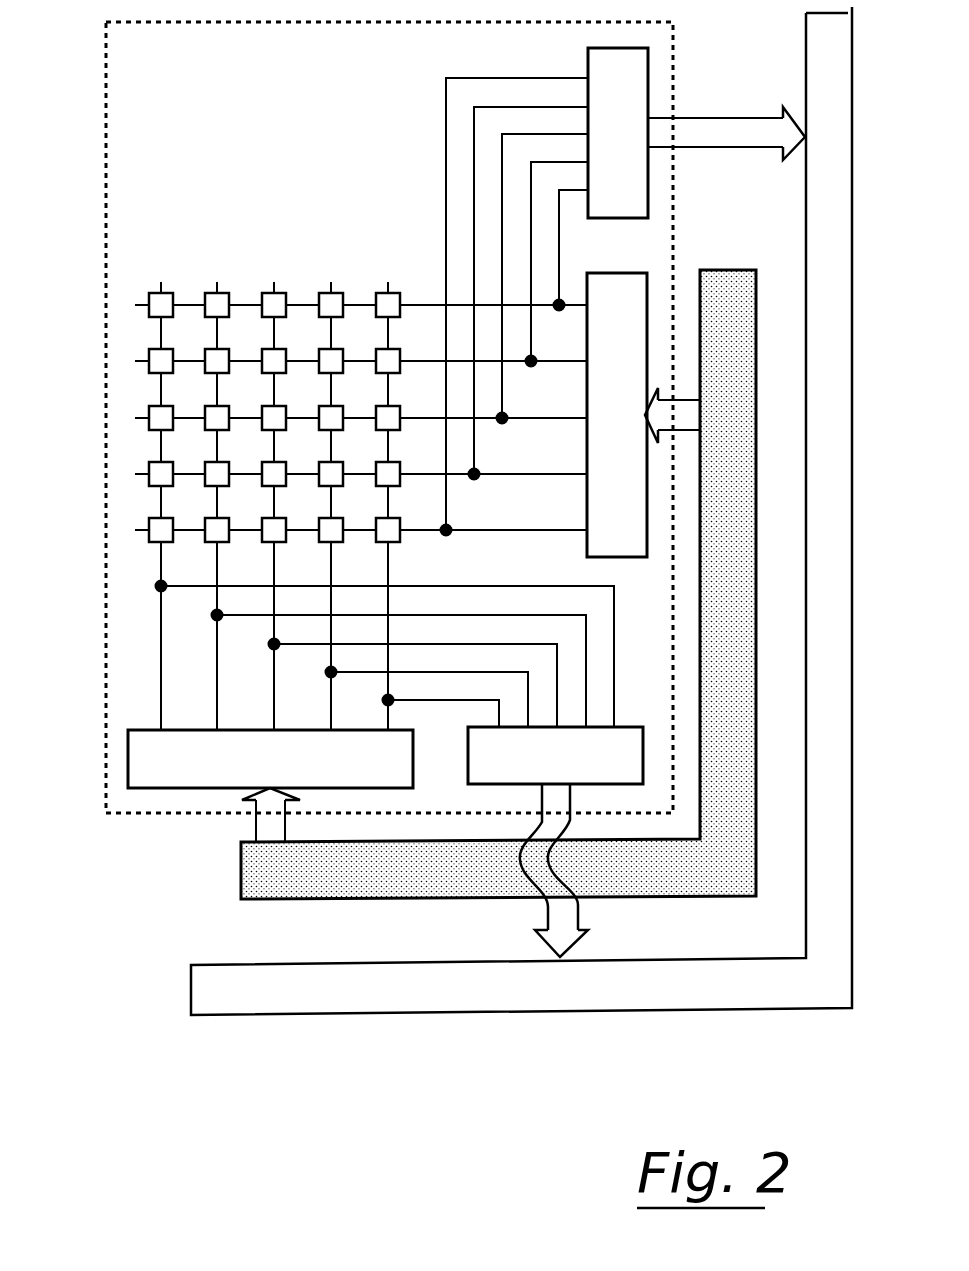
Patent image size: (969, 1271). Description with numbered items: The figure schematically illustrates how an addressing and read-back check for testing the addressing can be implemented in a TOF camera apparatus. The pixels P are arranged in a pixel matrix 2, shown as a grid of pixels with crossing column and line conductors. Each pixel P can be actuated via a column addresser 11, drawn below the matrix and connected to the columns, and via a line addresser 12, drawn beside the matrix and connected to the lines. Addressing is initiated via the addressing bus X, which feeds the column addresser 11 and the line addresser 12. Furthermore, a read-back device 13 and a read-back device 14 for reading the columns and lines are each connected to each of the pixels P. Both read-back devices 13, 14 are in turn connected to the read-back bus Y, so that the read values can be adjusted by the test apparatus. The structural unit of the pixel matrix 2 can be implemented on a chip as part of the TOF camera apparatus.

The pixel matrix 2 is at (106, 82).
The pixel P is at (165, 302).
The column addresser 11 is at (270, 786).
The line addresser 12 is at (643, 415).
The read-back device 13 is at (400, 769).
The read-back device 14 is at (623, 292).
The addressing bus X is at (262, 873).
The read-back bus Y is at (210, 998).